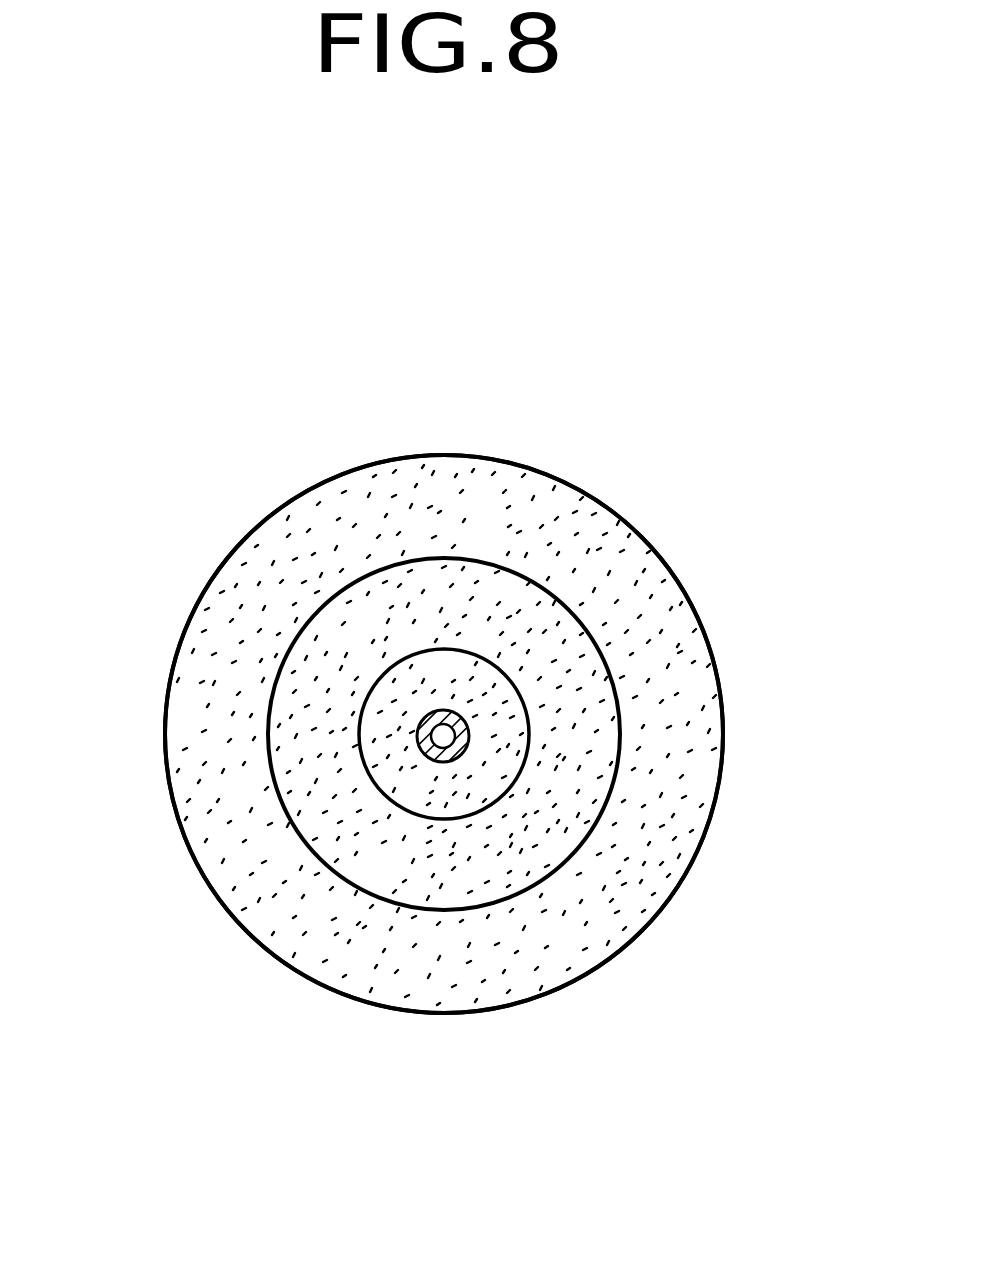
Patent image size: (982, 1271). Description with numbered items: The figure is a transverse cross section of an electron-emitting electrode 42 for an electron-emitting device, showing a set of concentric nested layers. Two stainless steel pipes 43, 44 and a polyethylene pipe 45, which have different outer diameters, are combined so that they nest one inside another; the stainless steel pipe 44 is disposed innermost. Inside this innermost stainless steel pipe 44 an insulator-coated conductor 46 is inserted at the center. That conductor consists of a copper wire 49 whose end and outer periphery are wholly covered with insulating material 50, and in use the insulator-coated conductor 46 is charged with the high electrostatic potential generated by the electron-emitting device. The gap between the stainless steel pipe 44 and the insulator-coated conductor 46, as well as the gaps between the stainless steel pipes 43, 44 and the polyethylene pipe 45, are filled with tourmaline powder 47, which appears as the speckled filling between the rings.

The electron-emitting electrode 42 is at (637, 515).
The stainless steel pipe 43 is at (343, 476).
The stainless steel pipe 44 is at (471, 652).
The polyethylene pipe 45 is at (268, 710).
The insulator-coated conductor 46 is at (468, 730).
The tourmaline powder 47 is at (500, 768).
The copper wire 49 is at (423, 713).
The insulating material 50 is at (428, 762).